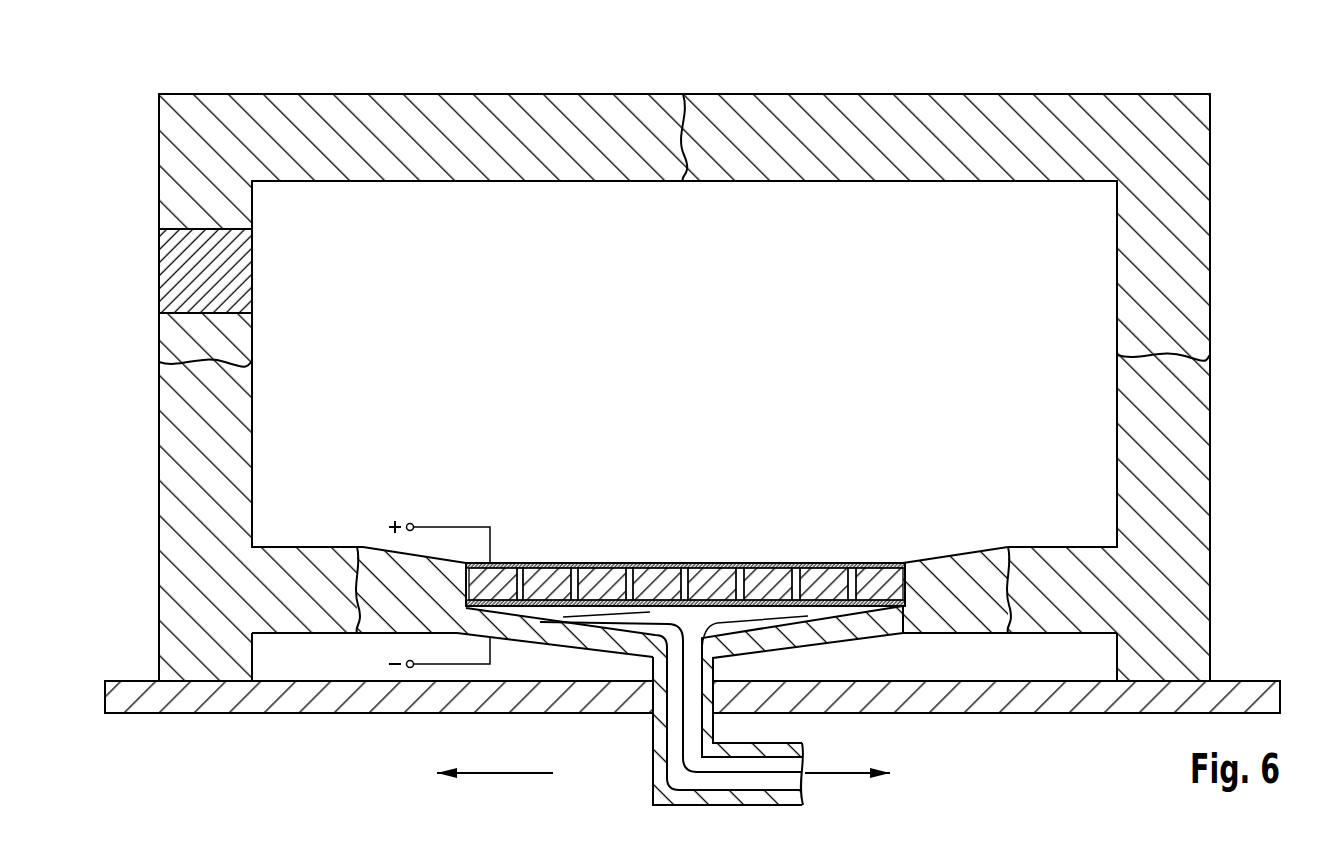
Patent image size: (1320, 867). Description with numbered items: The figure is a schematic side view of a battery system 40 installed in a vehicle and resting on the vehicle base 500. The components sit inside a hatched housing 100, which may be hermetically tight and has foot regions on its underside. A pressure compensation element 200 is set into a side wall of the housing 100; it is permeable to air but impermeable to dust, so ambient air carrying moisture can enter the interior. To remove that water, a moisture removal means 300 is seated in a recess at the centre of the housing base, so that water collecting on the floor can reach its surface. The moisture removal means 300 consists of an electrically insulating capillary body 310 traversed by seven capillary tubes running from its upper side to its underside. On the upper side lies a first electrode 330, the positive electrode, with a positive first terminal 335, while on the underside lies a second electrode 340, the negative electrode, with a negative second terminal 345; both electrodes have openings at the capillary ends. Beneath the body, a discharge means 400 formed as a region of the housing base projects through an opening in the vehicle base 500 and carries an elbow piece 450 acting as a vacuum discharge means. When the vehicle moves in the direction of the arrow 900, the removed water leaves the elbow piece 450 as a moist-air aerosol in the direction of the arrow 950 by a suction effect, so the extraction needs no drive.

The battery system 40 is at (704, 60).
The housing 100 is at (247, 94).
The pressure compensation element 200 is at (178, 270).
The moisture removal means 300 is at (685, 537).
The capillary body 310 is at (640, 563).
The first electrode 330 is at (660, 563).
The first terminal 335 is at (410, 523).
The second electrode 340 is at (628, 610).
The second terminal 345 is at (411, 668).
The discharge means 400 is at (833, 661).
The elbow piece 450 is at (660, 745).
The vehicle base 500 is at (141, 713).
The arrow 900 is at (504, 772).
The arrow 950 is at (850, 772).